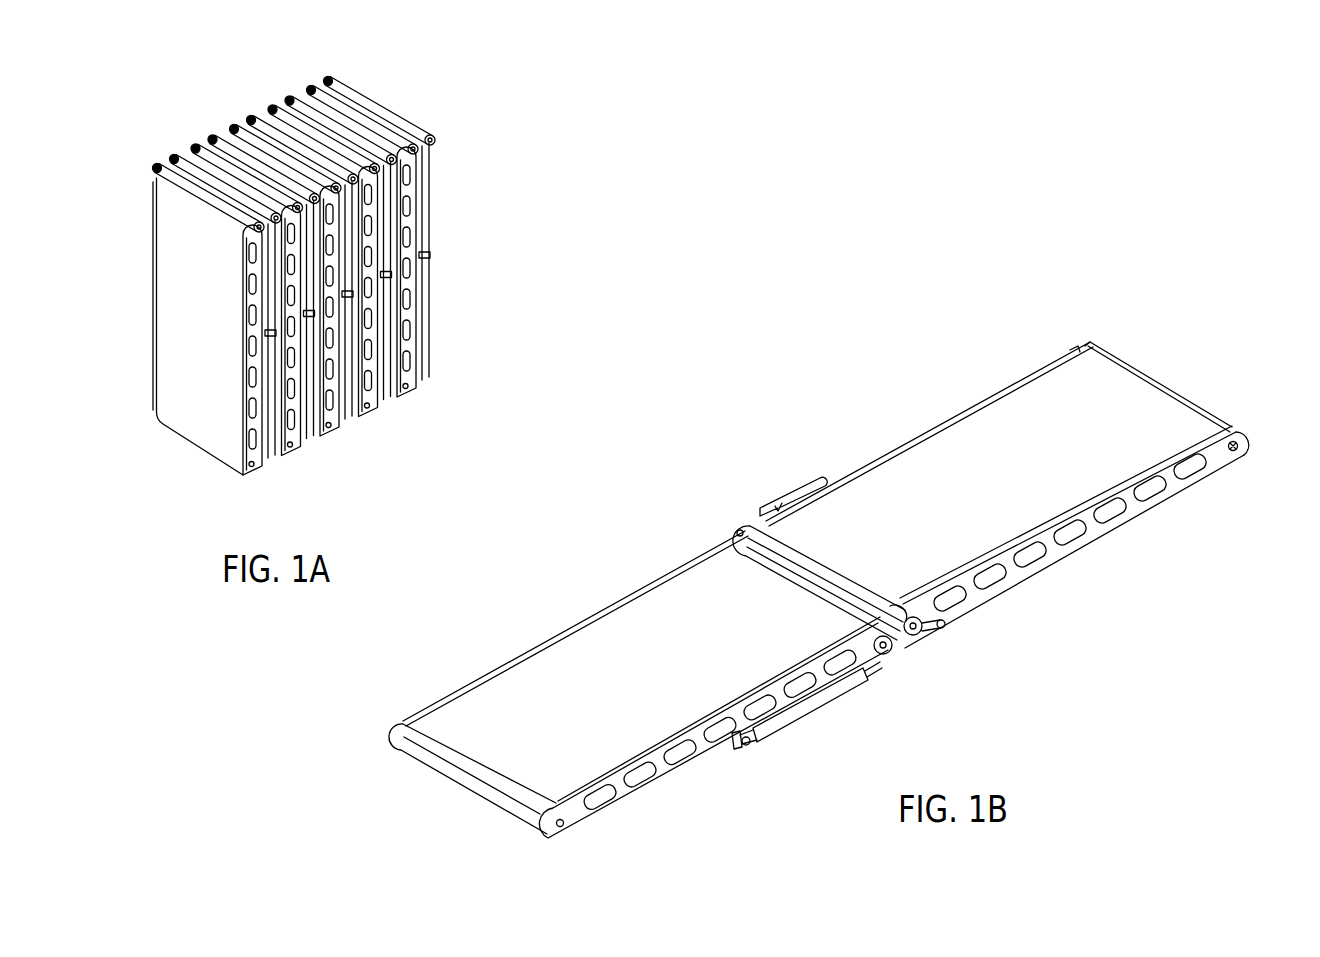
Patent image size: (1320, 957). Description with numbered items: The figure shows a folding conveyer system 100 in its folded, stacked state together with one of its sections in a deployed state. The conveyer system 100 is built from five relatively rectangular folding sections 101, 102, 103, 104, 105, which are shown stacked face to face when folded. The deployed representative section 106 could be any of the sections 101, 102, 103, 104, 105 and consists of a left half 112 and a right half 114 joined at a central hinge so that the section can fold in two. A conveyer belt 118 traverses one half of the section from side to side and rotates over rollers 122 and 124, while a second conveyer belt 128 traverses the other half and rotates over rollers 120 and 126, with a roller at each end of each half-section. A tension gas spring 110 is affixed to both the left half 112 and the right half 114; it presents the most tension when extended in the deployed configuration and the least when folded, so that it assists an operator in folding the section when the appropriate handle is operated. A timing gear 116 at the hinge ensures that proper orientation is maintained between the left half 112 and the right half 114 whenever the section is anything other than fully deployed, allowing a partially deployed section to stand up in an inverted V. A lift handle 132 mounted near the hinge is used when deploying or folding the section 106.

In FIG. 1A, the conveyer system 100 is at (329, 54).
In FIG. 1A, the section 101 is at (218, 336).
In FIG. 1A, the section 102 is at (257, 314).
In FIG. 1A, the section 103 is at (296, 294).
In FIG. 1A, the section 104 is at (333, 274).
In FIG. 1A, the section 105 is at (372, 255).
In FIG. 1B, the representative section 106 is at (625, 600).
In FIG. 1B, the tension gas spring 110 is at (829, 700).
In FIG. 1B, the left half 112 is at (448, 773).
In FIG. 1B, the right half 114 is at (1165, 375).
In FIG. 1B, the timing gear 116 is at (907, 636).
In FIG. 1B, the conveyer belt 118 is at (918, 439).
In FIG. 1B, the roller 120 is at (575, 830).
In FIG. 1B, the roller 122 is at (1245, 440).
In FIG. 1B, the roller 124 is at (937, 620).
In FIG. 1B, the roller 126 is at (885, 655).
In FIG. 1B, the conveyer belt 128 is at (549, 660).
In FIG. 1B, the lift handle 132 is at (770, 504).